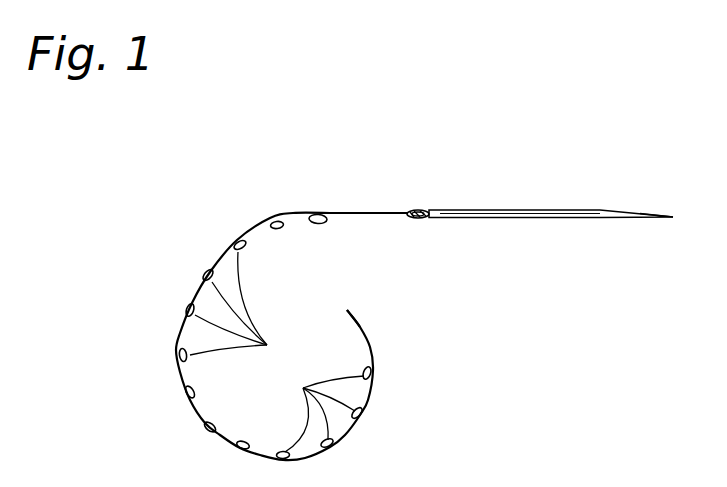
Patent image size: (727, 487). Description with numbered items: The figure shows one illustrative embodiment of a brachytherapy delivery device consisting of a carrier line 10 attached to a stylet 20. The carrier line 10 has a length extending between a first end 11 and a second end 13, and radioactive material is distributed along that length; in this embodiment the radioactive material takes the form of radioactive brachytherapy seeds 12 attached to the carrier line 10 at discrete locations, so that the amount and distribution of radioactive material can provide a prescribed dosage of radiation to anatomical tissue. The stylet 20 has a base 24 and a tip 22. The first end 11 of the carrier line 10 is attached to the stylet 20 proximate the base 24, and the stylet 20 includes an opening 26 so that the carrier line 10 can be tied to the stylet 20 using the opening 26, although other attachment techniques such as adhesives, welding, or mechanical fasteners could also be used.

The carrier line 10 is at (370, 400).
The first end 11 is at (418, 220).
The radioactive brachytherapy seeds 12 is at (277, 352).
The second end 13 is at (352, 310).
The stylet 20 is at (547, 197).
The tip 22 is at (674, 218).
The base 24 is at (438, 208).
The opening 26 is at (425, 210).